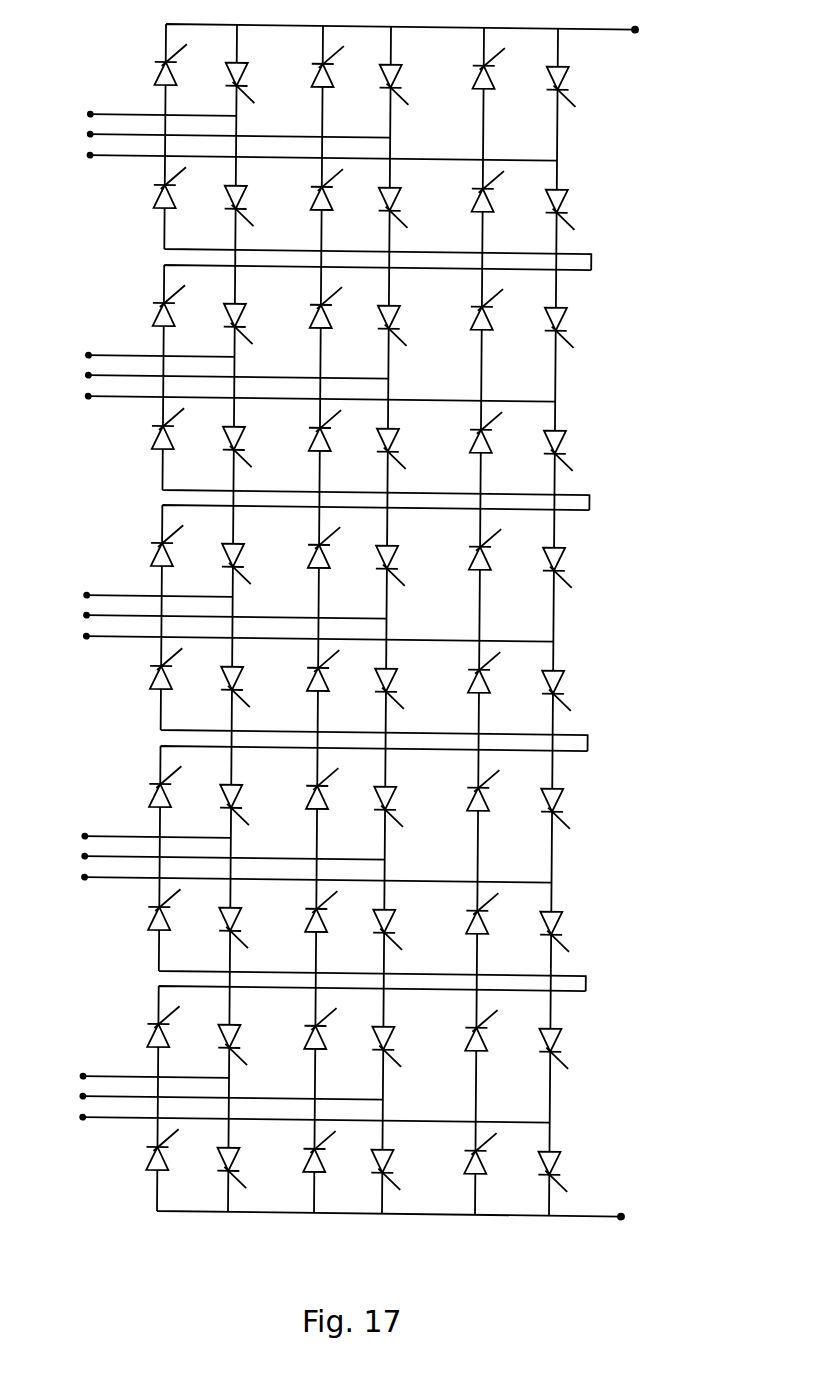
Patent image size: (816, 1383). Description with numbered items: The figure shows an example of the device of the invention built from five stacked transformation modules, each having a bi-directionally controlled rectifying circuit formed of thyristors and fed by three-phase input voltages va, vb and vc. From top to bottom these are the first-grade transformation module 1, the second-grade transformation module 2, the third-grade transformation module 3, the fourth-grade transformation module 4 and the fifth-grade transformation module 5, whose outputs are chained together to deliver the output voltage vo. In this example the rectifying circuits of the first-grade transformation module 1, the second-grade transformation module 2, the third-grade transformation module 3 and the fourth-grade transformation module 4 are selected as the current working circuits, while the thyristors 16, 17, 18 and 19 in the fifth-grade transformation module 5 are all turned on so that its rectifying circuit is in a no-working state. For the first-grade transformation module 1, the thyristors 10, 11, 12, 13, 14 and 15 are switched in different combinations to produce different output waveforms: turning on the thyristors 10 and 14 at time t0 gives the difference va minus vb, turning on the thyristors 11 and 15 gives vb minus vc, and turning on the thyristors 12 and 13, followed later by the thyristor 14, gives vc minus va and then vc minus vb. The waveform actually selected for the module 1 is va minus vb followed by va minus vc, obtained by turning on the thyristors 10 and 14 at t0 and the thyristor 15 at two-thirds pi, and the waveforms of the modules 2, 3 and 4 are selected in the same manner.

The first-grade transformation module 1 is at (361, 142).
The second-grade transformation module 2 is at (152, 268).
The third-grade transformation module 3 is at (152, 513).
The fourth-grade transformation module 4 is at (148, 753).
The fifth-grade transformation module 5 is at (352, 1095).
The thyristor 10 is at (152, 77).
The thyristor 11 is at (305, 80).
The thyristor 12 is at (467, 85).
The thyristor 13 is at (150, 201).
The thyristor 14 is at (303, 201).
The thyristor 15 is at (468, 207).
The thyristor 16 is at (138, 1042).
The thyristor 17 is at (248, 1040).
The thyristor 18 is at (140, 1160).
The thyristor 19 is at (273, 1160).